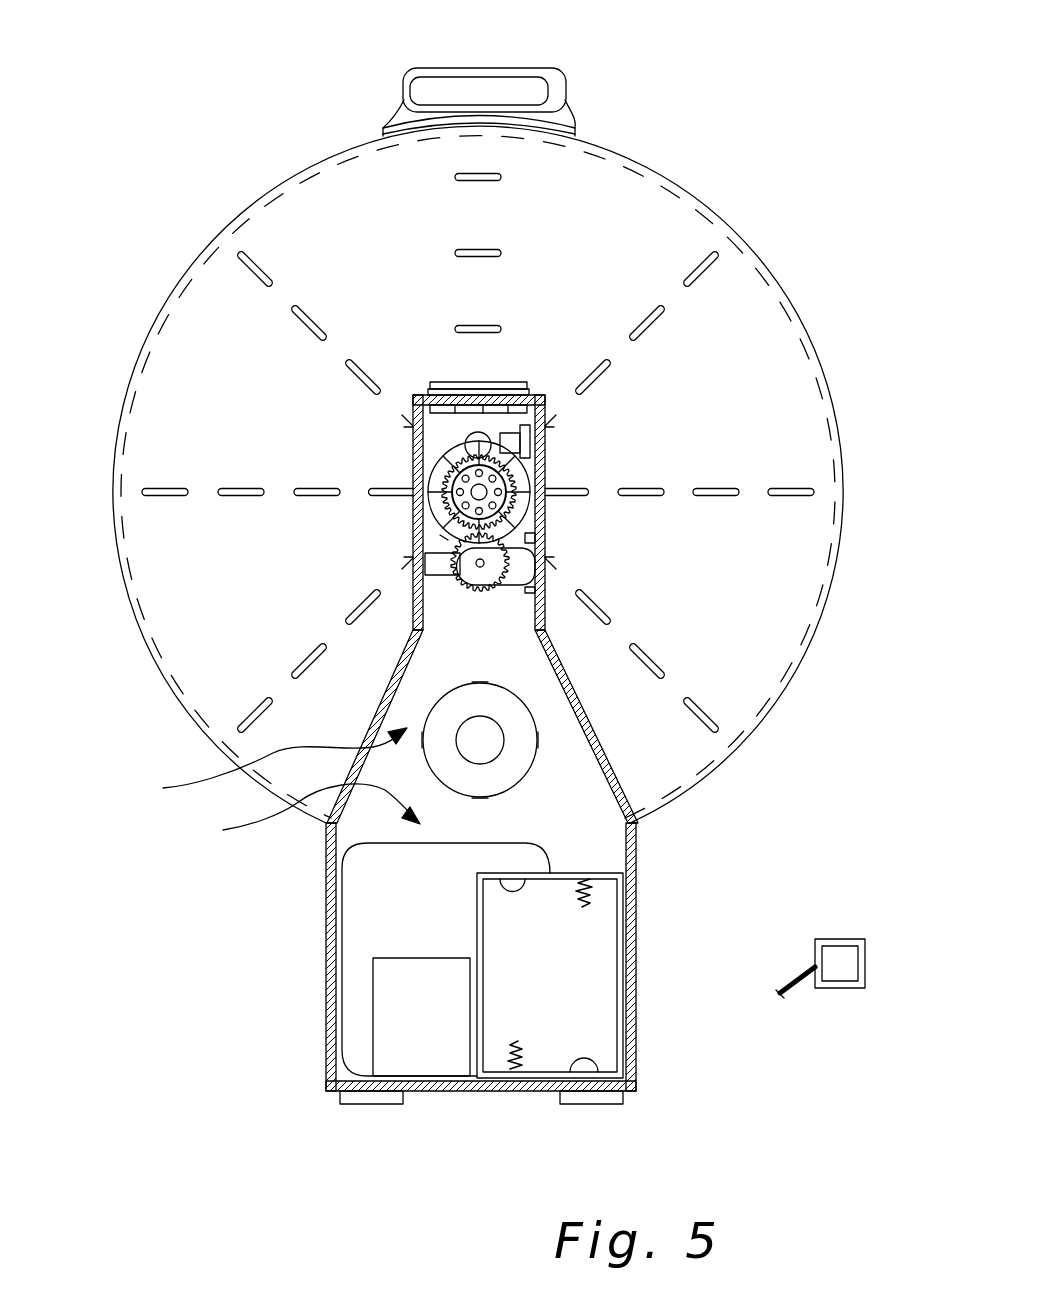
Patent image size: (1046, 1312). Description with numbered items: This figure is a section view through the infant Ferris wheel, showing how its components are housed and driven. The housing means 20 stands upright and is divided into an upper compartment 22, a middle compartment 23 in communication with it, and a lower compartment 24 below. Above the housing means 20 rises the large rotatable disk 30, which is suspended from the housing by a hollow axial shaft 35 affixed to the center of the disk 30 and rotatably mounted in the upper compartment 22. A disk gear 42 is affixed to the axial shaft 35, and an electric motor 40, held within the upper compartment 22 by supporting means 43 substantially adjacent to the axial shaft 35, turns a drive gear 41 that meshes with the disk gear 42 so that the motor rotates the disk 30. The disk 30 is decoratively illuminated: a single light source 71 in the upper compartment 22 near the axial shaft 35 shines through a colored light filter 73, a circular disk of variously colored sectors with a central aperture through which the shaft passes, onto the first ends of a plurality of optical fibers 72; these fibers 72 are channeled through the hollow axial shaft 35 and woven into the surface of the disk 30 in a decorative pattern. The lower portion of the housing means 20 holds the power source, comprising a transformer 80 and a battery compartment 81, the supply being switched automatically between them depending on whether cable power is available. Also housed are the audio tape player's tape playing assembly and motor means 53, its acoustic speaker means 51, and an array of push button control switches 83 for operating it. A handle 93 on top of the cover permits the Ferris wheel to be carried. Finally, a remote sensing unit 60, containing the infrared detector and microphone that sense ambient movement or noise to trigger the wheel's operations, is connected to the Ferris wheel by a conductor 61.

The housing means 20 is at (648, 915).
The upper compartment 22 is at (433, 533).
The middle compartment 23 is at (265, 767).
The lower compartment 24 is at (301, 815).
The rotatable disk 30 is at (773, 413).
The hollow axial shaft 35 is at (512, 497).
The electric motor 40 is at (533, 567).
The drive gear 41 is at (480, 590).
The disk gear 42 is at (545, 537).
The supporting means 43 is at (433, 563).
The acoustic speaker means 51 is at (460, 703).
The tape playing assembly and motor means 53 is at (373, 880).
The remote sensing unit 60 is at (852, 958).
The conductor 61 is at (785, 995).
The single light source 71 is at (465, 437).
The optical fibers 72 is at (634, 332).
The colored light filter 73 is at (442, 478).
The transformer 80 is at (407, 1007).
The battery compartment 81 is at (580, 1031).
The push button control switches 83 is at (478, 382).
The handle 93 is at (487, 69).